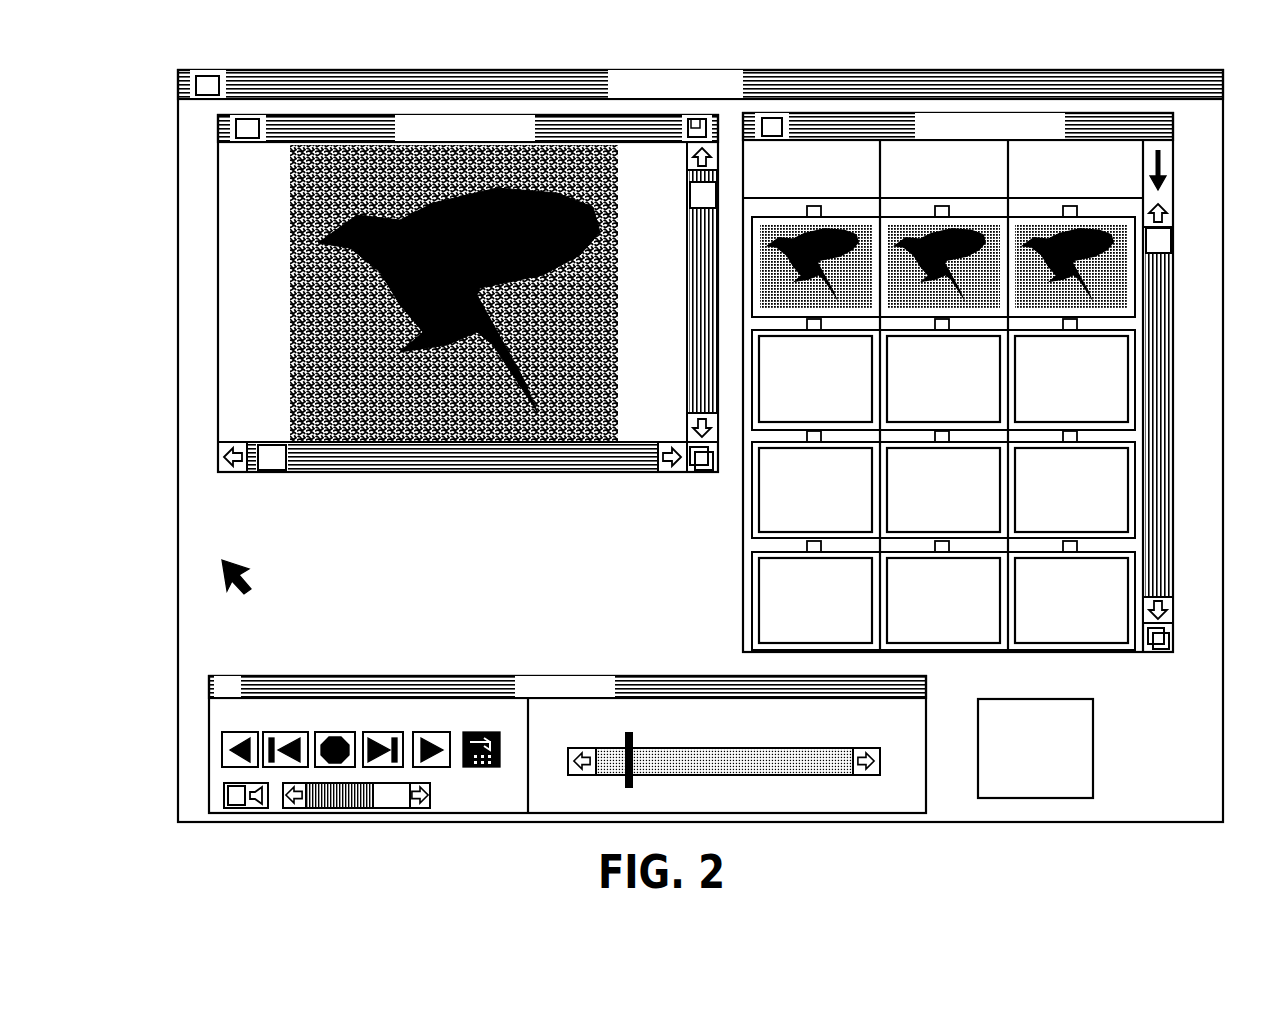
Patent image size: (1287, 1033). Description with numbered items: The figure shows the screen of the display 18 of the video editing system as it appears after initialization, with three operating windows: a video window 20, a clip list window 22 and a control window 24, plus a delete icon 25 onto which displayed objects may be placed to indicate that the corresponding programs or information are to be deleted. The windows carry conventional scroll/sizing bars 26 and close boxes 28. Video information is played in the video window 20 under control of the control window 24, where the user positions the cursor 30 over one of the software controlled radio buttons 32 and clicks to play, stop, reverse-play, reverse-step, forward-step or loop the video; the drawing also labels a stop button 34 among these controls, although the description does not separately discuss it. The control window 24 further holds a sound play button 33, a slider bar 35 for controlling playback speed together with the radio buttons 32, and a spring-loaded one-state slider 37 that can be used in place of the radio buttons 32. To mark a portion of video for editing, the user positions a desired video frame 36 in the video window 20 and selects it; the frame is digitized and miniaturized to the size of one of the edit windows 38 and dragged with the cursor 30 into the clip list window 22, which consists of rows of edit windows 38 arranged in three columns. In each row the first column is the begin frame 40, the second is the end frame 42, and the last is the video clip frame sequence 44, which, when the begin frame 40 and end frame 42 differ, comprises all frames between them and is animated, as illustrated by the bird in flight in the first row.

The display 18 is at (1140, 814).
The video window 20 is at (228, 328).
The clip list window 22 is at (1048, 115).
The control window 24 is at (548, 802).
The delete icon 25 is at (1078, 722).
The scroll/sizing bars 26 is at (222, 458).
The close boxes 28 is at (772, 128).
The cursor 30 is at (222, 572).
The radio buttons 32 is at (440, 745).
The sound play button 33 is at (228, 797).
The stop button 34 is at (345, 740).
The slider bar 35 is at (305, 805).
The video frame 36 is at (292, 253).
The one-state slider 37 is at (800, 775).
The edit windows 38 is at (1110, 585).
The begin frame 40 is at (855, 157).
The end frame 42 is at (900, 160).
The video clip frame sequence 44 is at (1135, 163).